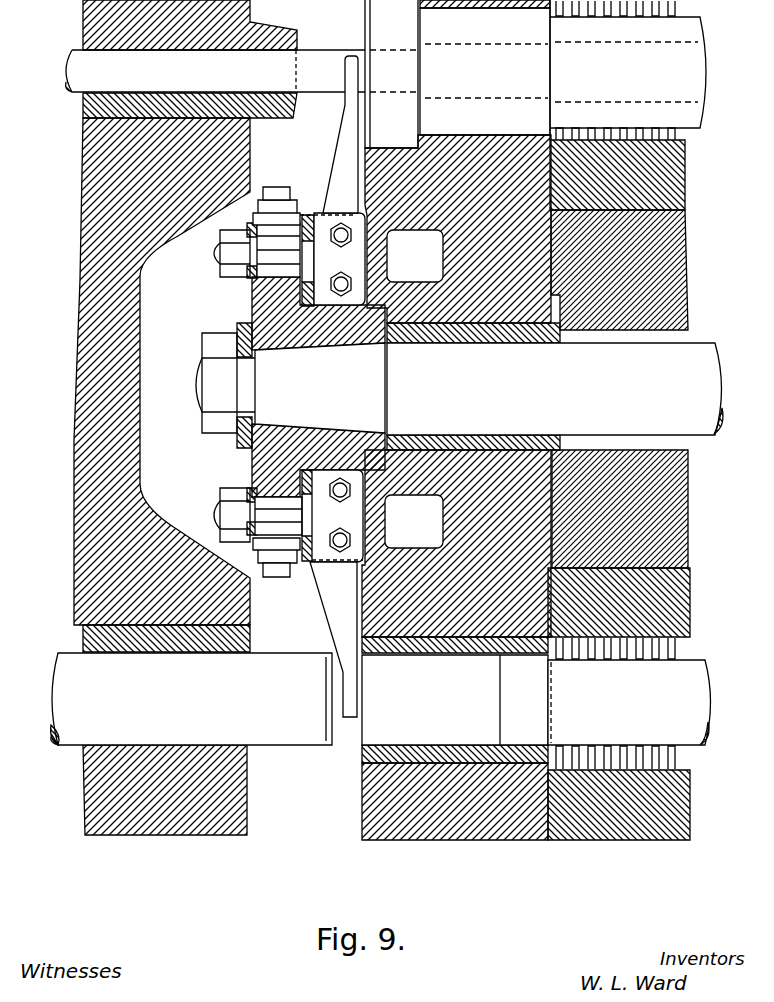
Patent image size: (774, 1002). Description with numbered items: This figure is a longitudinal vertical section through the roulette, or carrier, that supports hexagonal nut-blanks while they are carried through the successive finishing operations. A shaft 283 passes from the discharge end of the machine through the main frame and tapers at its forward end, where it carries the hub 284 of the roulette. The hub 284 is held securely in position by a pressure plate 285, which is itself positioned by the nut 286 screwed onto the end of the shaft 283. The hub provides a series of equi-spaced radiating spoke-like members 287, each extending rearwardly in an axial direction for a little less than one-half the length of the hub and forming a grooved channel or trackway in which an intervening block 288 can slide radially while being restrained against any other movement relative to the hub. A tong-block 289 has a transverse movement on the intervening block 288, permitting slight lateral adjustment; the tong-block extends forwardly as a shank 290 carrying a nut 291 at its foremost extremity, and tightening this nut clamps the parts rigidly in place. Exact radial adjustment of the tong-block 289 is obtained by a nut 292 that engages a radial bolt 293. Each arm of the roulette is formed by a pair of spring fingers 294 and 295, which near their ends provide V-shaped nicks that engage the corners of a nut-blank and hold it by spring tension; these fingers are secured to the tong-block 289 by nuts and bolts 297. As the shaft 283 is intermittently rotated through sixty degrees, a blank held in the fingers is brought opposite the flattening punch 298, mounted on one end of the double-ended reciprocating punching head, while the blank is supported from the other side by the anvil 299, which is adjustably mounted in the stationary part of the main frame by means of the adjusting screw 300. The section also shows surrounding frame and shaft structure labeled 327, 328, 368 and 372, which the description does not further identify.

The shaft 283 is at (480, 389).
The hub 284 is at (318, 387).
The washer 285 is at (238, 447).
The nut 286 is at (213, 344).
The washer 287 is at (247, 288).
The washer 288 is at (306, 213).
The plate 289 is at (312, 263).
The nut 290 is at (278, 379).
The bolt 291 is at (224, 262).
The nut 292 is at (275, 186).
The lock nut 293 is at (283, 186).
The key 294 is at (344, 633).
The key 295 is at (348, 128).
The screws 297 is at (350, 282).
The shaft 298 is at (191, 699).
The sleeve 299 is at (455, 700).
The threaded shaft 300 is at (692, 654).
The bracket 327 is at (457, 74).
The shaft 328 is at (307, 71).
The housing 368 is at (185, 417).
The ring 372 is at (153, 633).